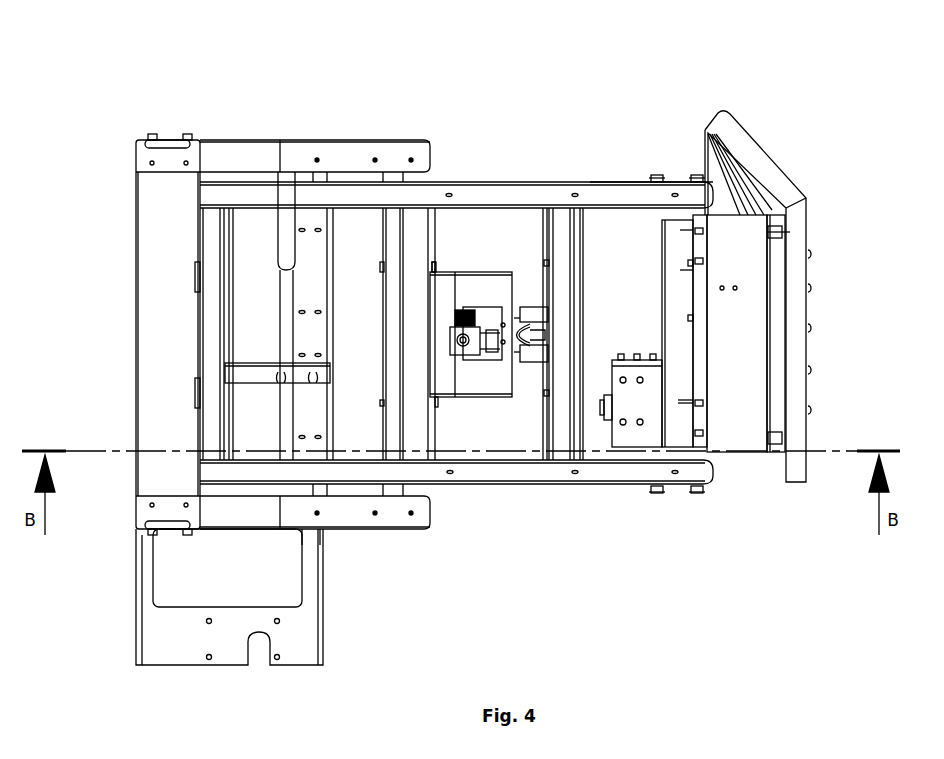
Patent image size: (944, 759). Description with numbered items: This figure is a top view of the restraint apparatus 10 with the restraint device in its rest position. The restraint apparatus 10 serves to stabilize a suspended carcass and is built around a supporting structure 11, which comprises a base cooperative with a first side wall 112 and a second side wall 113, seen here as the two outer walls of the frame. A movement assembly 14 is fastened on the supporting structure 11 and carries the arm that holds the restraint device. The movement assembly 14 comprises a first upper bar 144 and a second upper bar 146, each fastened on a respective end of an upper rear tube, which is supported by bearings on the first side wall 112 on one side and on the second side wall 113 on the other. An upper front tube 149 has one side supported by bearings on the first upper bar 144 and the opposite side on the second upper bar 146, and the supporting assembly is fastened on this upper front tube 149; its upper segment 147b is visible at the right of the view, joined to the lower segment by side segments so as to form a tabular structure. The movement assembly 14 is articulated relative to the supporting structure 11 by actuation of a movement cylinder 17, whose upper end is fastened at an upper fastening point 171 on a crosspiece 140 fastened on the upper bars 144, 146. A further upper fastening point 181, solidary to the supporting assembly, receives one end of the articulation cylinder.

The restraint apparatus 10 is at (222, 86).
The supporting structure 11 is at (348, 137).
The second side wall 113 is at (398, 152).
The first side wall 112 is at (358, 512).
The movement assembly 14 is at (512, 180).
The crosspiece 140 is at (565, 228).
The second upper bar 146 is at (628, 190).
The first upper bar 144 is at (440, 470).
The movement cylinder 17 is at (493, 345).
The upper fastening point 171 is at (535, 355).
The upper fastening point 181 is at (631, 410).
The upper front tube 149 is at (678, 425).
The upper segment 147b is at (737, 420).